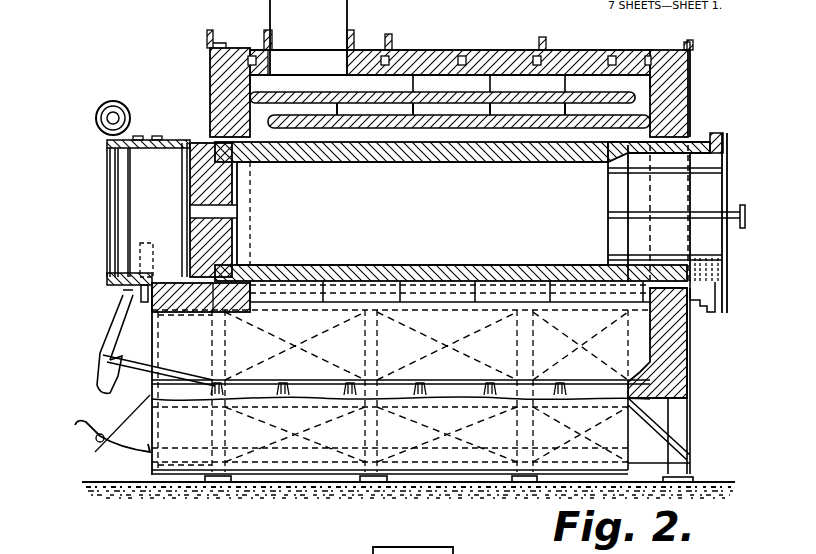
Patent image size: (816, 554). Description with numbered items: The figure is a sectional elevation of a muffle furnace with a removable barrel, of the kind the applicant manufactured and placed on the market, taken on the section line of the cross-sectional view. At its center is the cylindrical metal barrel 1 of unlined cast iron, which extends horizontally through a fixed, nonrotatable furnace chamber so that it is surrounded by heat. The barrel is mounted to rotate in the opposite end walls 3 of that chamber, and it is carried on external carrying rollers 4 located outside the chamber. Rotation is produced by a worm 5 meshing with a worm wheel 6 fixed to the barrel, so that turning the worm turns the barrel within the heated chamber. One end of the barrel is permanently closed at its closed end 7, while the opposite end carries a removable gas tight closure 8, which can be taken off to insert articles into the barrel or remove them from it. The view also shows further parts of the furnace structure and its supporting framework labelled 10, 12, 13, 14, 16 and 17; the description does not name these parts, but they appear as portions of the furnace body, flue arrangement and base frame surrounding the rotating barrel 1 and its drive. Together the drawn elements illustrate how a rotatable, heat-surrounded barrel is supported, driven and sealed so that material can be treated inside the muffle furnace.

The cylindrical metal barrel 1 is at (392, 160).
The end walls 3 is at (220, 94).
The external carrying rollers 4 is at (123, 287).
The worm 5 is at (117, 103).
The worm wheel 6 is at (107, 135).
The closed end 7 is at (237, 178).
The removable gas tight closure 8 is at (608, 195).
The supporting frame 10 is at (422, 381).
The diagonal braces 12 is at (408, 355).
The end frame panel 13 is at (182, 381).
The flue passage 14 is at (450, 108).
The flue baffle 16 is at (640, 103).
The upper flue passage 17 is at (557, 87).